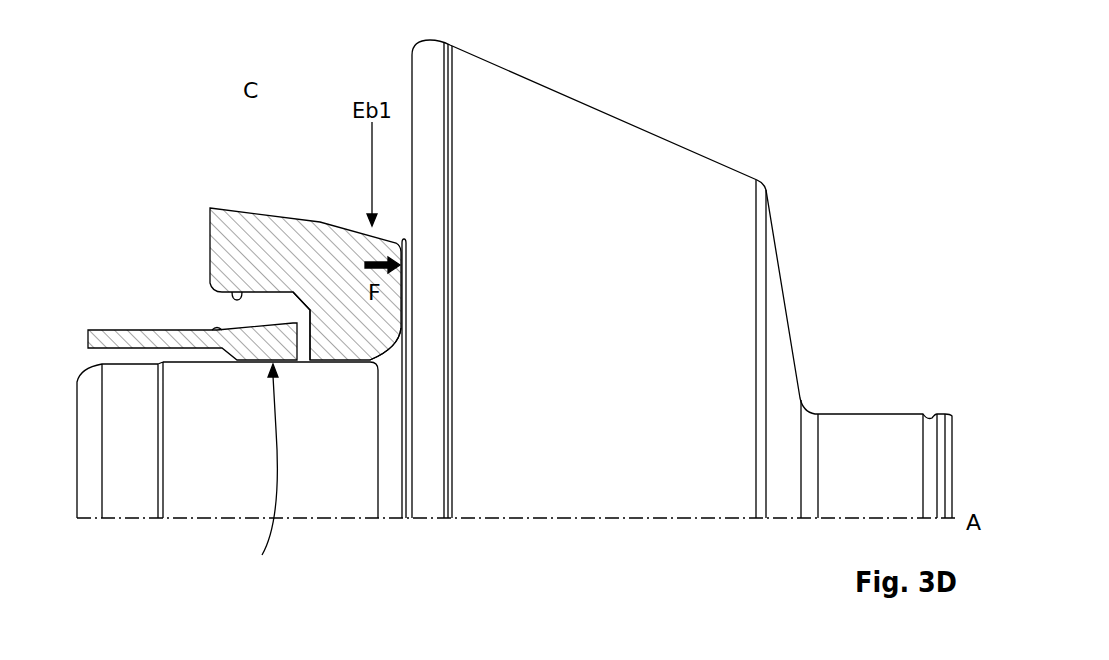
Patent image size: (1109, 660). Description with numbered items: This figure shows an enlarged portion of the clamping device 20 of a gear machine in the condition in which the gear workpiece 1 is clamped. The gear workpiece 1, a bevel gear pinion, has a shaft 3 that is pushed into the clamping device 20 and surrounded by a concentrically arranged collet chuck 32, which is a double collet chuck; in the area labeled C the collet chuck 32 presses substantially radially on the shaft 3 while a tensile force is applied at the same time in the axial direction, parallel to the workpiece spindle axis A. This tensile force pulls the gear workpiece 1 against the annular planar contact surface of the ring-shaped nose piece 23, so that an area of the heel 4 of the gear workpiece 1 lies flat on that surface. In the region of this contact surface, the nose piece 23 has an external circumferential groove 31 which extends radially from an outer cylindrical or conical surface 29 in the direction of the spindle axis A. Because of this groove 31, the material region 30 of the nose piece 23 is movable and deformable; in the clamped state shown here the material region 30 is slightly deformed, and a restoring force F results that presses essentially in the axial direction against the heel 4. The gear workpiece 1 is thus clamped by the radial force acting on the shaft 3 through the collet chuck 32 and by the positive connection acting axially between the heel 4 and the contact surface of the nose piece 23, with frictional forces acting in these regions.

The gear workpiece 1 is at (579, 480).
The shaft 3 is at (215, 495).
The heel 4 is at (410, 87).
The clamping device 20 is at (754, 80).
The nose piece 23 is at (229, 233).
The outer cylindrical or conical surface 29 is at (297, 225).
The material region 30 is at (388, 301).
The circumferential groove 31 is at (347, 278).
The collet chuck 32 is at (146, 338).